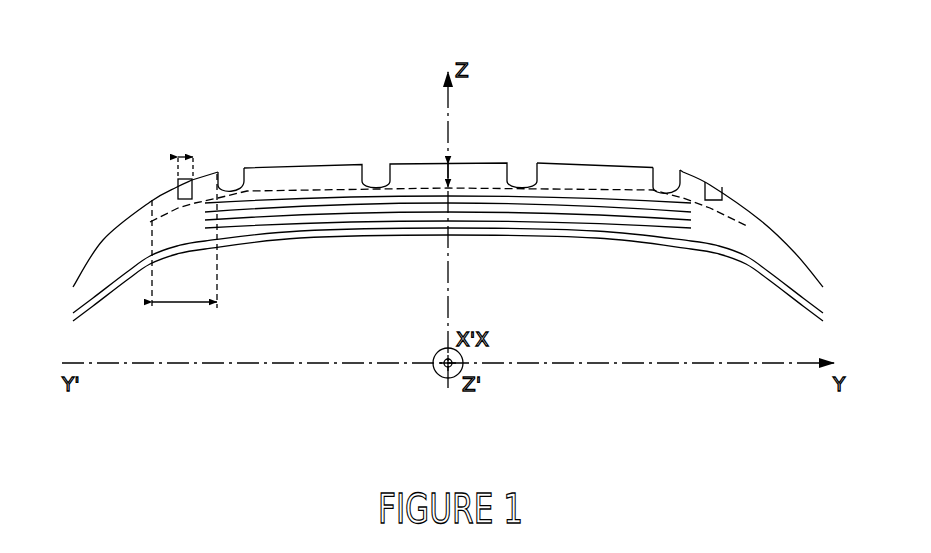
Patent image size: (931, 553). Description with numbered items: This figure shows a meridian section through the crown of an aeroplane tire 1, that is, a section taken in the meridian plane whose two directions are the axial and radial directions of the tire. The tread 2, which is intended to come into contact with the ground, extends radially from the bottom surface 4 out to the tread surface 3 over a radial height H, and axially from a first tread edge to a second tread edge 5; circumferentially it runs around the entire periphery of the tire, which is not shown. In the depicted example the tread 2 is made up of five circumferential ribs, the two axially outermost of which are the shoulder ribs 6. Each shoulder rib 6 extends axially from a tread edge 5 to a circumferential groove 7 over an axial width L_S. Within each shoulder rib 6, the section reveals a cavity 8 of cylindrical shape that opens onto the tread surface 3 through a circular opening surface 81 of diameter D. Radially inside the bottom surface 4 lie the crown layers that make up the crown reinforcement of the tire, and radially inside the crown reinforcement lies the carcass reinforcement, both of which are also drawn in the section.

The aeroplane tire 1 is at (173, 93).
The tread 2 is at (423, 164).
The tread surface 3 is at (591, 159).
The bottom surface 4 is at (733, 217).
The tread edge 5 is at (150, 200).
The shoulder rib 6 is at (207, 176).
The circumferential groove 7 is at (232, 187).
The cavity 8 is at (188, 202).
The opening surface 81 is at (180, 179).